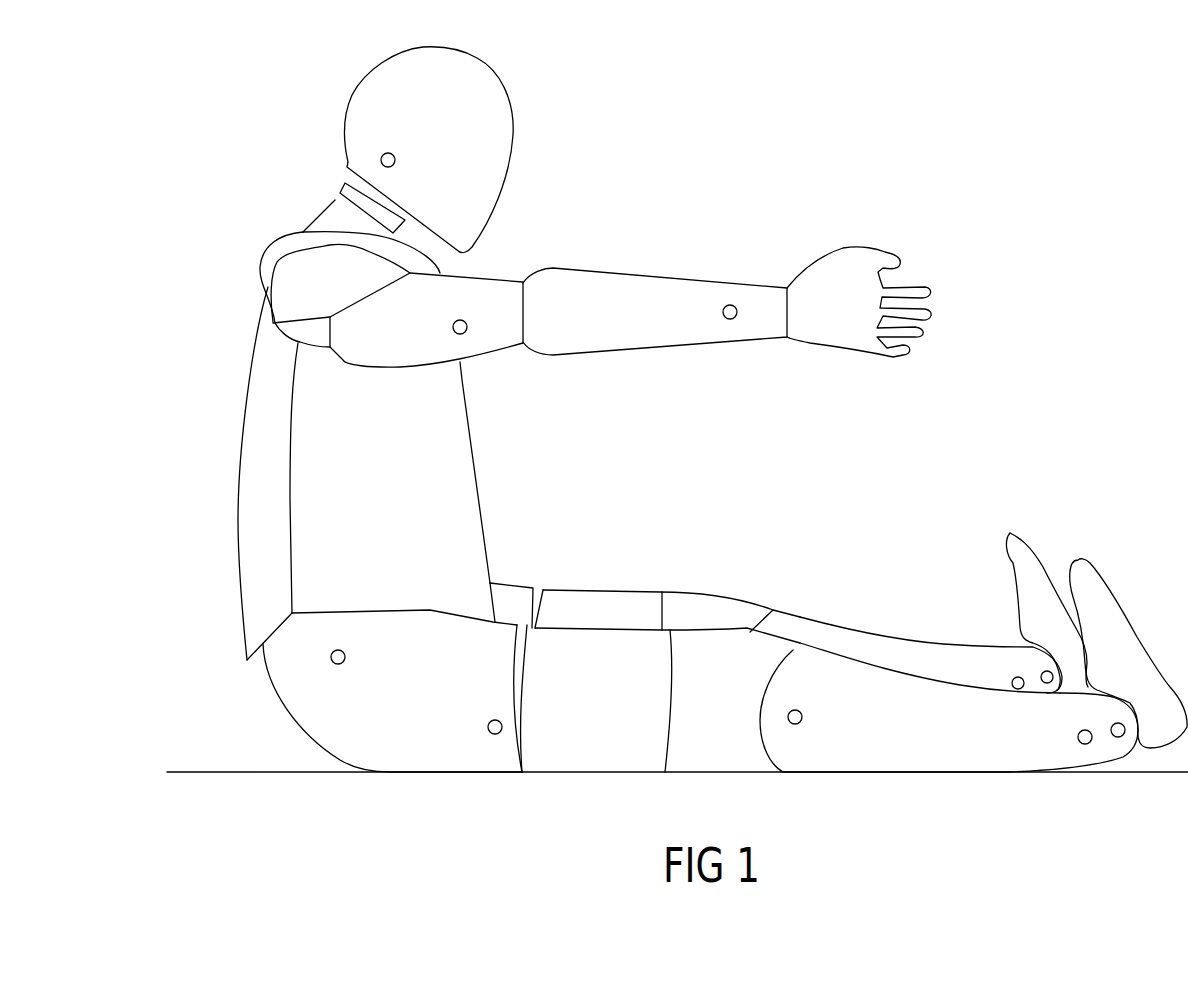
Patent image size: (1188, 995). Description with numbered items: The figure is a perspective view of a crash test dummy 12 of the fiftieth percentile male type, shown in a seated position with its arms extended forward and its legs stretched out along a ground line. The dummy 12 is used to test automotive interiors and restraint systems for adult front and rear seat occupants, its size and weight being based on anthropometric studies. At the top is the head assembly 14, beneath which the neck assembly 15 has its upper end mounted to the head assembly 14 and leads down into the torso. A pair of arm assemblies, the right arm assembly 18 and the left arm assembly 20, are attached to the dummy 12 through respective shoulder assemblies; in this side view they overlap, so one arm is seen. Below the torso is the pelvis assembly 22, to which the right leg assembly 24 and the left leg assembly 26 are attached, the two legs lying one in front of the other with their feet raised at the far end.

The crash test dummy 12 is at (343, 125).
The head assembly 14 is at (493, 78).
The neck assembly 15 is at (347, 200).
The right arm assembly 18 is at (492, 270).
The left arm assembly 20 is at (630, 307).
The pelvis assembly 22 is at (300, 732).
The right leg assembly 24 is at (875, 690).
The left leg assembly 26 is at (843, 640).